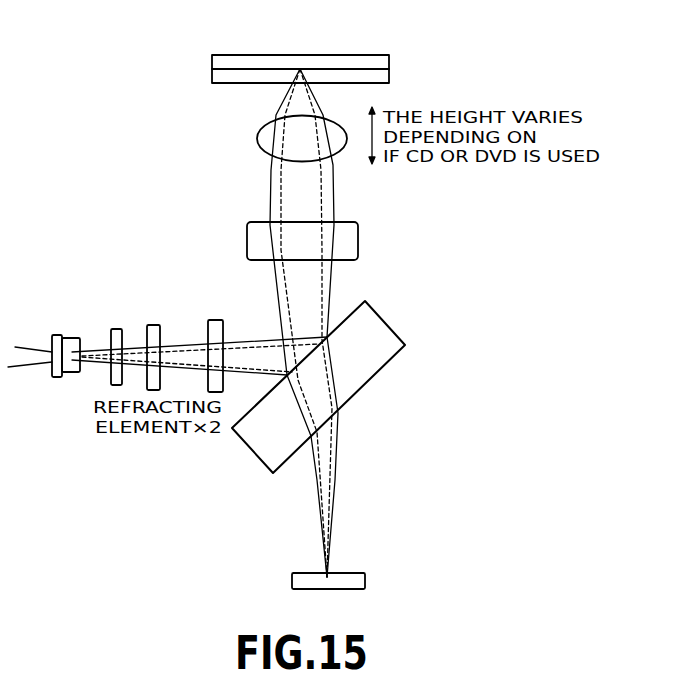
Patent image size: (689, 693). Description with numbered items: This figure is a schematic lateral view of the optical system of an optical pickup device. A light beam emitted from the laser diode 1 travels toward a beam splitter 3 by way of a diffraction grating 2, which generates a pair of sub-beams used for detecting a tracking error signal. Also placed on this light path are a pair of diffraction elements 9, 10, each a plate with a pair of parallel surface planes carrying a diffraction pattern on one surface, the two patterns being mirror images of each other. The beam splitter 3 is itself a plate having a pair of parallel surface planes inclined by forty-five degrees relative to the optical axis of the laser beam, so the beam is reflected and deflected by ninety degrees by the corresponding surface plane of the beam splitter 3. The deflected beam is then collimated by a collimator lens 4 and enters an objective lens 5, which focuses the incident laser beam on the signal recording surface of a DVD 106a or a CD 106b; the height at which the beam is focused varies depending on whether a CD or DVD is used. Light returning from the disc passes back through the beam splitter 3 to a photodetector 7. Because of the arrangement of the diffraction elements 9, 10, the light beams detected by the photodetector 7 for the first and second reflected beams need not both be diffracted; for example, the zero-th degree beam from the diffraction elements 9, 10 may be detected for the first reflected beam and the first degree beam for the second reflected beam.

The CD 106b is at (219, 62).
The DVD 106a is at (219, 78).
The objective lens 5 is at (259, 135).
The collimator lens 4 is at (247, 243).
The laser diode 1 is at (56, 335).
The diffraction grating 2 is at (116, 329).
The diffraction element 9 is at (153, 325).
The diffraction element 10 is at (216, 320).
The beam splitter 3 is at (372, 367).
The photodetector 7 is at (365, 579).